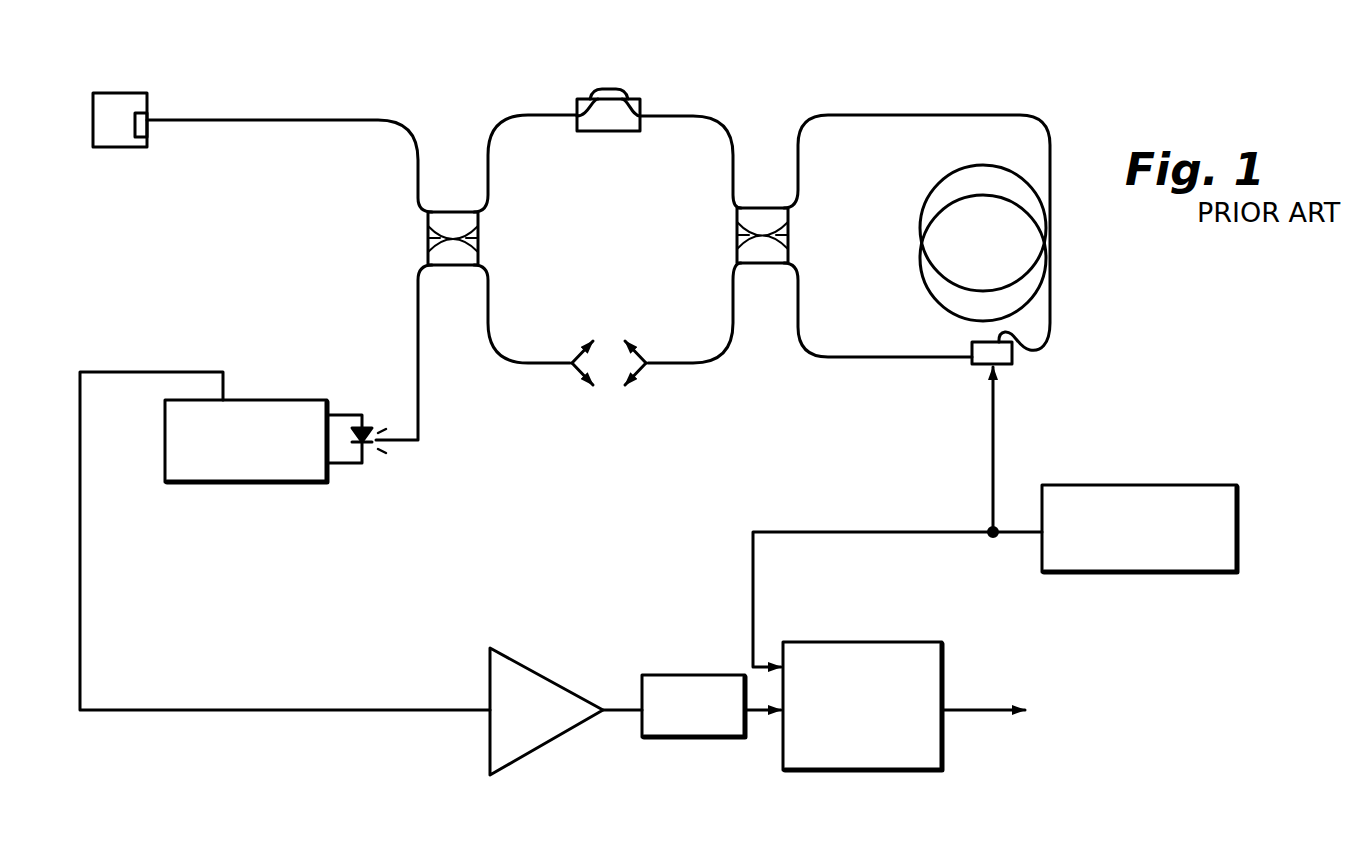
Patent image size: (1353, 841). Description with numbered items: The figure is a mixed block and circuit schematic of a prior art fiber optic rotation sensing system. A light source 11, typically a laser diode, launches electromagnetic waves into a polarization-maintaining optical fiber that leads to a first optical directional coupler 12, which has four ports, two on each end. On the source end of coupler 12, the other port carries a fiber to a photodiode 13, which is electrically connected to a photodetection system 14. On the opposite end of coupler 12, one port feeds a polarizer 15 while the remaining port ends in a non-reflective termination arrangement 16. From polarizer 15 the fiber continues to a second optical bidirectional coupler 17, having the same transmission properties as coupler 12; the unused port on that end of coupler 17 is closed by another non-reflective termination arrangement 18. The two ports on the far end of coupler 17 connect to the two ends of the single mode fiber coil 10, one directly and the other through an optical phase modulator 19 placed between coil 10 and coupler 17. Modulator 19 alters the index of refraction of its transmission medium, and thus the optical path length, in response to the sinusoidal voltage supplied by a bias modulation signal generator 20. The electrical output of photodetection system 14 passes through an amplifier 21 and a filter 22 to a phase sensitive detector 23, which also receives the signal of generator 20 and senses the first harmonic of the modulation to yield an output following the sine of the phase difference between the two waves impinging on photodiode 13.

The coil 10 is at (933, 193).
The light source 11 is at (124, 93).
The first optical directional coupler 12 is at (453, 212).
The photodiode 13 is at (364, 430).
The photodetection system 14 is at (306, 400).
The polarizer 15 is at (590, 101).
The non-reflective termination arrangement 16 is at (578, 358).
The optical bidirectional coupler 17 is at (762, 208).
The non-reflective termination arrangement 18 is at (640, 358).
The optical phase modulator 19 is at (1012, 351).
The bias modulation signal generator 20 is at (1214, 485).
The amplifier 21 is at (548, 680).
The filter 22 is at (701, 675).
The phase sensitive detector 23 is at (877, 642).